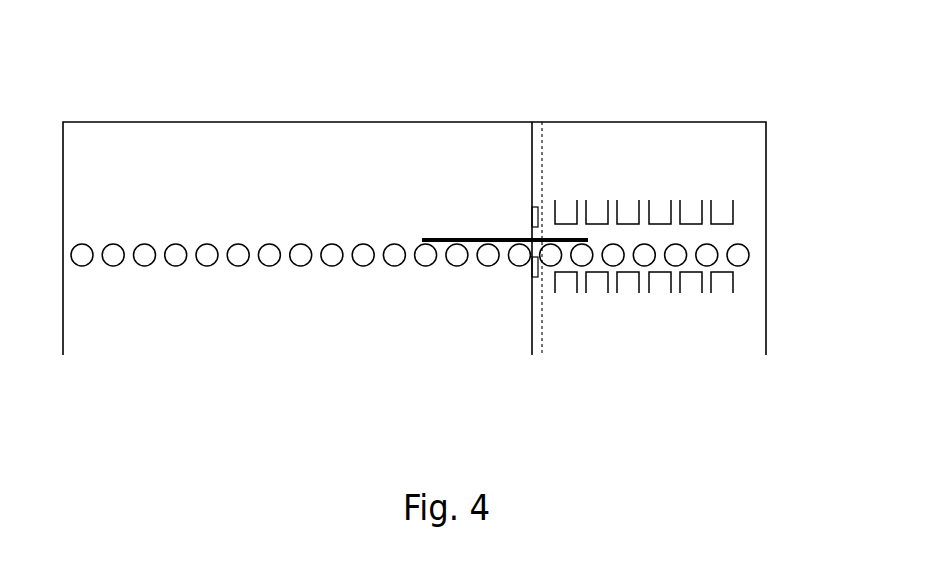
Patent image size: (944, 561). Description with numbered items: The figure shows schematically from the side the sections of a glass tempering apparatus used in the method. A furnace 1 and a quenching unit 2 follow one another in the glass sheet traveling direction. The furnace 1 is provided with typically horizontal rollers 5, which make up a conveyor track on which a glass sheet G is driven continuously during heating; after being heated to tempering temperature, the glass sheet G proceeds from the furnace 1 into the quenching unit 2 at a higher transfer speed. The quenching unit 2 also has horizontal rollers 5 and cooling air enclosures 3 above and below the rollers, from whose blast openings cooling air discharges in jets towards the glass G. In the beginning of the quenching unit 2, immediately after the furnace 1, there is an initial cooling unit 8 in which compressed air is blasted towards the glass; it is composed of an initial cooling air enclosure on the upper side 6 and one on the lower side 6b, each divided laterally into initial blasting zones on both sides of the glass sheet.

The furnace 1 is at (368, 130).
The quenching unit 2 is at (605, 135).
The cooling air enclosures 3 is at (735, 216).
The rollers 5 is at (643, 243).
The upper initial cooling air enclosure 6 is at (530, 218).
The lower initial cooling air enclosure 6b is at (531, 276).
The initial cooling unit 8 is at (538, 130).
The glass sheet G is at (440, 238).